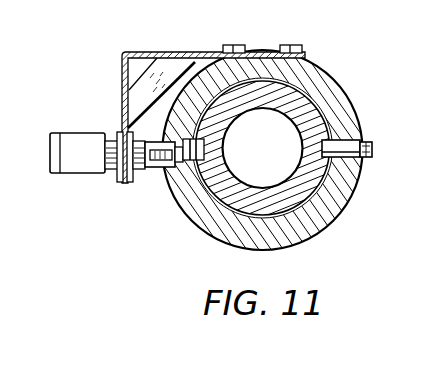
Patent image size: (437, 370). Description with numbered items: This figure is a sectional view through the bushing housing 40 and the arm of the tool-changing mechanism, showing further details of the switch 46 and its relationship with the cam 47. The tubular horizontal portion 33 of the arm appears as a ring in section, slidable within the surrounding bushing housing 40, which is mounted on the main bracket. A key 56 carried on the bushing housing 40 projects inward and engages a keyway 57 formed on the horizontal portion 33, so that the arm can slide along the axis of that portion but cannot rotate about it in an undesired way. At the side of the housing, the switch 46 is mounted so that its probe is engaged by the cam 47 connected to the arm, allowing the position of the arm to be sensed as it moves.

The bushing housing 40 is at (315, 86).
The horizontal portion 33 is at (313, 121).
The switch 46 is at (83, 150).
The cam 47 is at (188, 153).
The key 56 is at (342, 146).
The keyway 57 is at (368, 157).